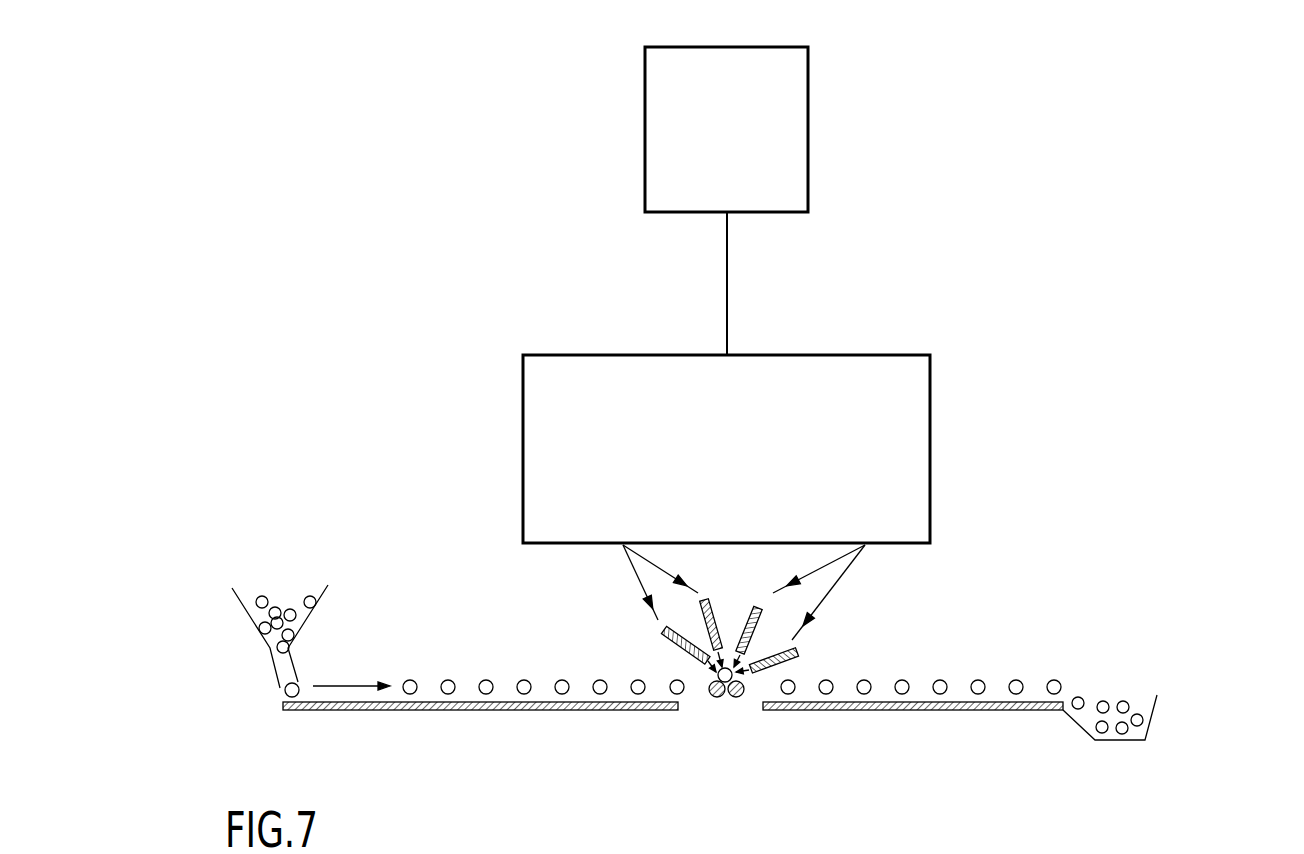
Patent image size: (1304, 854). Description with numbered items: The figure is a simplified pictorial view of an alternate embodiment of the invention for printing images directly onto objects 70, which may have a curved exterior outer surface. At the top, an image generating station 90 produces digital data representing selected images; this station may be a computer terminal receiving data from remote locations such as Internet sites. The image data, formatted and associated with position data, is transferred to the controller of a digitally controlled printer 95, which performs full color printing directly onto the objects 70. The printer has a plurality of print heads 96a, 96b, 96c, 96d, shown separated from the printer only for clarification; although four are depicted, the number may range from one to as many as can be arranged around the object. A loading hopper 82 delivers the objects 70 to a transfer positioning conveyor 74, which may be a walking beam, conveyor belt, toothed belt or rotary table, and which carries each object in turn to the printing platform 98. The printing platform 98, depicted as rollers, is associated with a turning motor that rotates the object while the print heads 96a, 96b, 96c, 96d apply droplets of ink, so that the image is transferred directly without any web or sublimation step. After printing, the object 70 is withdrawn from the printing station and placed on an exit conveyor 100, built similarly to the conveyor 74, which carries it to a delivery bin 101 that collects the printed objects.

The object 70 is at (410, 694).
The transfer positioning conveyor 74 is at (666, 724).
The loading hopper 82 is at (250, 620).
The image generating station 90 is at (810, 118).
The digitally controlled printer 95 is at (930, 430).
The print head 96a is at (670, 642).
The print head 96b is at (716, 612).
The print head 96c is at (763, 612).
The print head 96d is at (803, 652).
The printing platform 98 is at (726, 710).
The exit conveyor 100 is at (855, 724).
The delivery bin 101 is at (1152, 720).